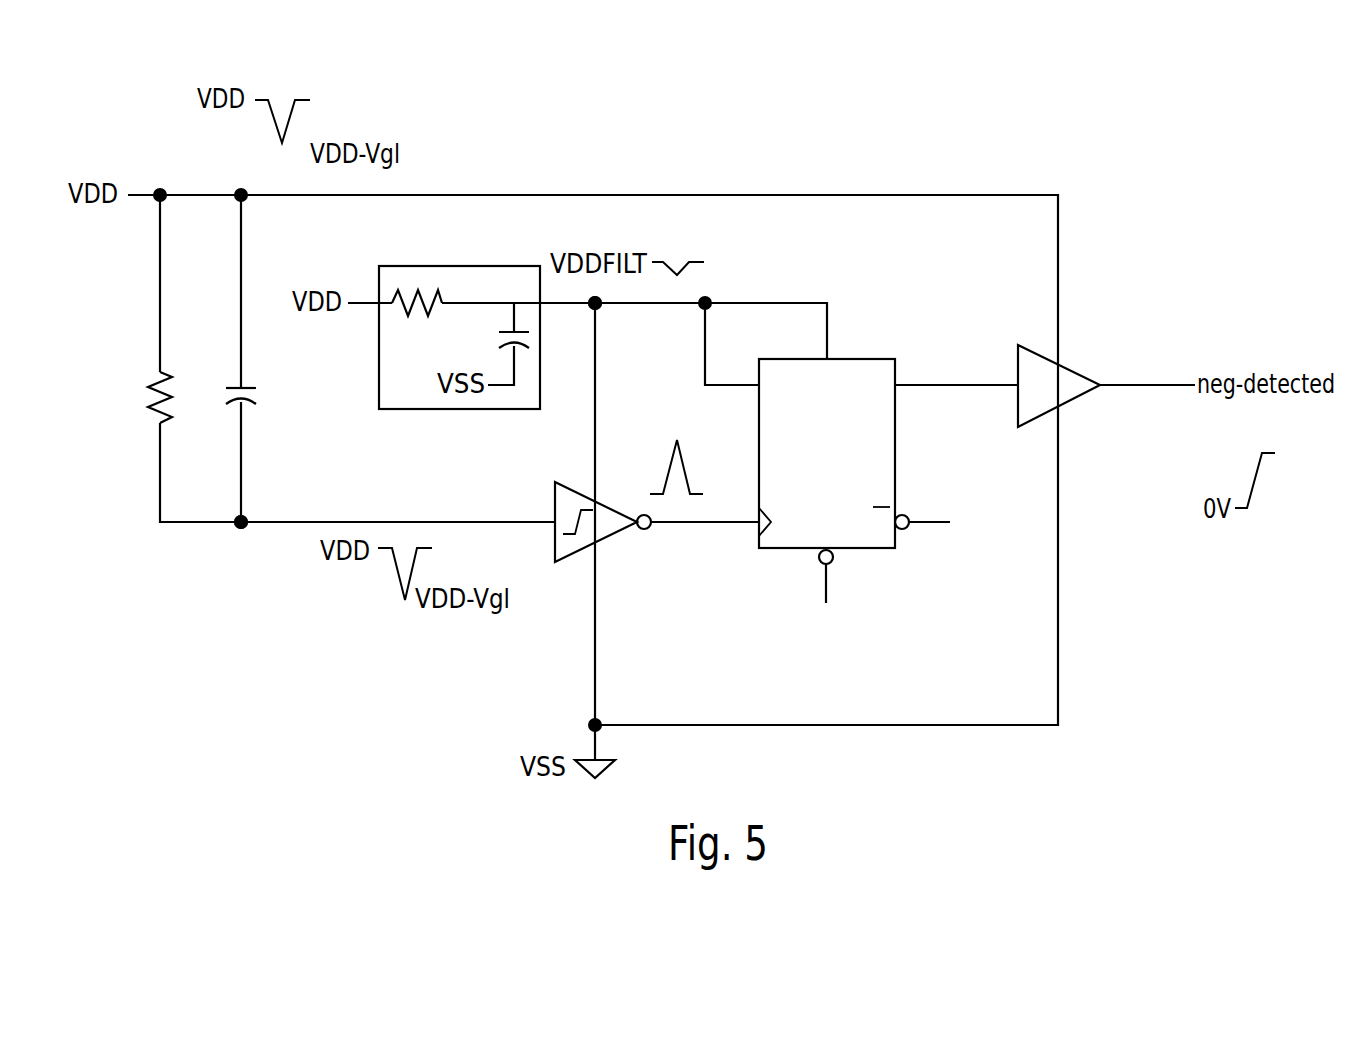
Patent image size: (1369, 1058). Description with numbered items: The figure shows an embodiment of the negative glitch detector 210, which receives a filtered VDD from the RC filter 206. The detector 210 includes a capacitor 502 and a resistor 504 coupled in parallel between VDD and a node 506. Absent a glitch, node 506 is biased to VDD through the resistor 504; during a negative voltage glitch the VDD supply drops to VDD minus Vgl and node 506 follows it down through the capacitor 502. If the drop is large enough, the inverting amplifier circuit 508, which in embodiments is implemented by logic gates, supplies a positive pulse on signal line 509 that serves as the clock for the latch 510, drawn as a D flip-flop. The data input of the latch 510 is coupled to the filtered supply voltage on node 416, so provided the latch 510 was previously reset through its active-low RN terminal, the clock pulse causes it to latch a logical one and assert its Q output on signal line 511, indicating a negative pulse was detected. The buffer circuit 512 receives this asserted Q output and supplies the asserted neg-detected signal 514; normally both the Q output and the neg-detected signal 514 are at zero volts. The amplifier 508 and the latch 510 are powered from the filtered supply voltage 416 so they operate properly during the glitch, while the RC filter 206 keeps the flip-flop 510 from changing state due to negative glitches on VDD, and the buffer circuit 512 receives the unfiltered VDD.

The negative glitch detector 210 is at (1137, 141).
The capacitor 502 is at (232, 388).
The resistor 504 is at (156, 418).
The node 506 is at (241, 531).
The RC filter 206 is at (412, 410).
The filtered supply voltage node 416 is at (657, 306).
The inverting amplifier circuit 508 is at (583, 552).
The signal line 509 is at (684, 524).
The latch 510 is at (790, 549).
The signal line 511 is at (962, 387).
The buffer circuit 512 is at (1087, 353).
The neg-detected signal 514 is at (1150, 387).